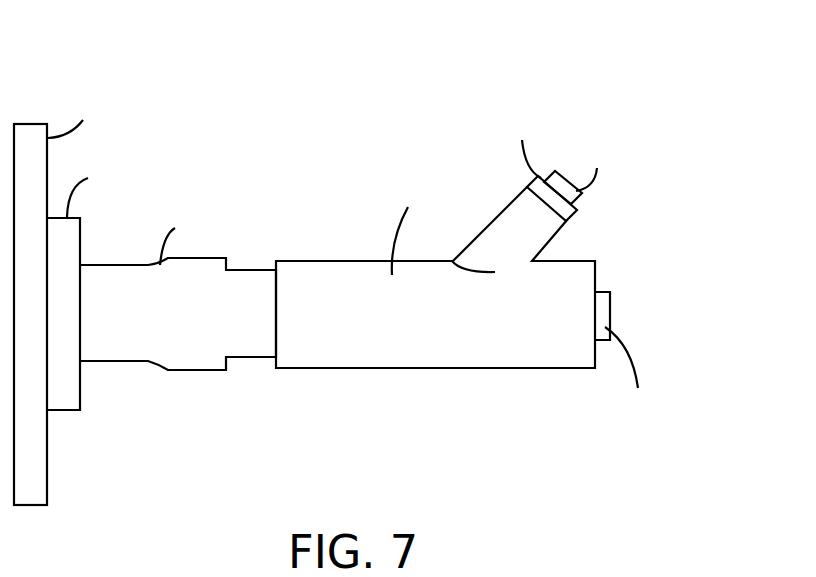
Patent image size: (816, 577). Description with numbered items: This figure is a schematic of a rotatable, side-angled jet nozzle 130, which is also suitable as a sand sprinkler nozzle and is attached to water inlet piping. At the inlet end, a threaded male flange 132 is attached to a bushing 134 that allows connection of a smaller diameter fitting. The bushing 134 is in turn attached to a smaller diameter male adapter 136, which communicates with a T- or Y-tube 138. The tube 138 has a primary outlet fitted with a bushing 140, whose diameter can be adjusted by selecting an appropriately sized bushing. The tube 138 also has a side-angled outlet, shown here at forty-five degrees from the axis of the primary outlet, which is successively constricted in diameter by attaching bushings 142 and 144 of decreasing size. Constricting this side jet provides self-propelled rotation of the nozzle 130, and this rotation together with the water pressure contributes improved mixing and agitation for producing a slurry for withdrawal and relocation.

The nozzle 130 is at (428, 67).
The threaded male flange 132 is at (30, 505).
The bushing 134 is at (66, 412).
The male adapter 136 is at (172, 372).
The T- or Y-tube 138 is at (326, 369).
The bushing 140 is at (611, 300).
The bushing 142 is at (535, 178).
The bushing 144 is at (572, 202).